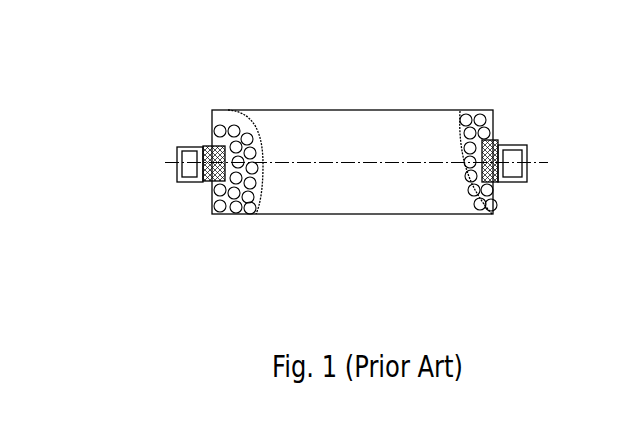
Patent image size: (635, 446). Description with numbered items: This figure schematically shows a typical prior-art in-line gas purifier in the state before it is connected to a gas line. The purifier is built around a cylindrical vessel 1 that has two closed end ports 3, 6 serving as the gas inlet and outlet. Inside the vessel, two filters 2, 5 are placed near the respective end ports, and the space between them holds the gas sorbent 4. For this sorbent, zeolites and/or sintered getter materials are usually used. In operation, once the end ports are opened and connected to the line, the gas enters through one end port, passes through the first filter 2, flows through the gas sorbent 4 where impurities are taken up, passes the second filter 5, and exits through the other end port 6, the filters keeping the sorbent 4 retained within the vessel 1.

The cylindrical vessel 1 is at (428, 109).
The filter 2 is at (496, 141).
The closed end port 3 is at (505, 176).
The gas sorbent 4 is at (228, 208).
The filter 5 is at (214, 179).
The closed end port 6 is at (182, 142).